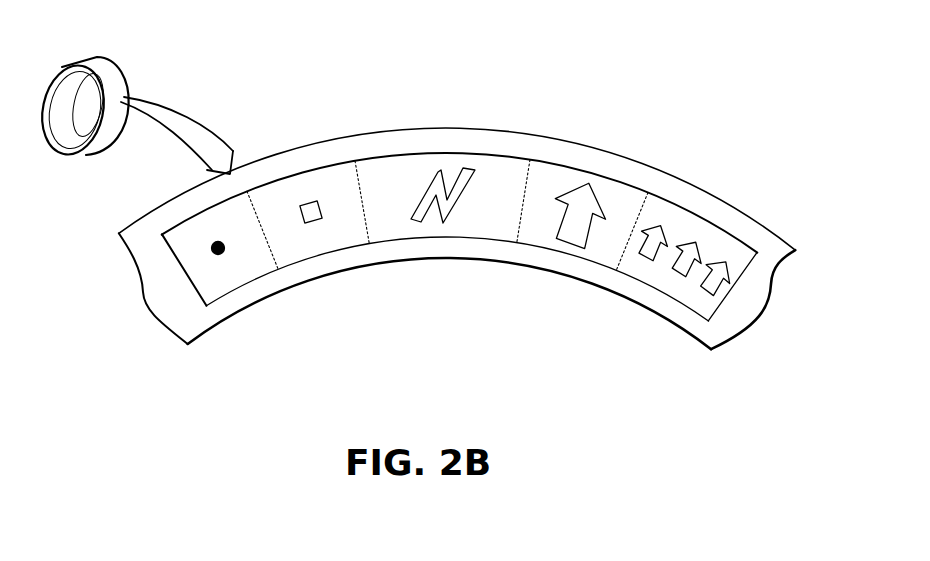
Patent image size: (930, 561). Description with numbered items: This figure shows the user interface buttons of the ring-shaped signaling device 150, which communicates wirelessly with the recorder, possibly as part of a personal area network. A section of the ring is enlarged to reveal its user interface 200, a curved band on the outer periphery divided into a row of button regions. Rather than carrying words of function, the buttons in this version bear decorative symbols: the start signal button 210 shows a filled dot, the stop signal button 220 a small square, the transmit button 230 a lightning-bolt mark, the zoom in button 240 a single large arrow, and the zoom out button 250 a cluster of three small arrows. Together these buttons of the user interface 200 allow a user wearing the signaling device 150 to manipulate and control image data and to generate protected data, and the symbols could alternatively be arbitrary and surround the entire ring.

The signaling device 150 is at (117, 56).
The user interface 200 is at (704, 180).
The start signal button 210 is at (238, 280).
The stop signal button 220 is at (338, 242).
The transmit button 230 is at (475, 228).
The zoom in button 240 is at (597, 253).
The zoom out button 250 is at (655, 257).